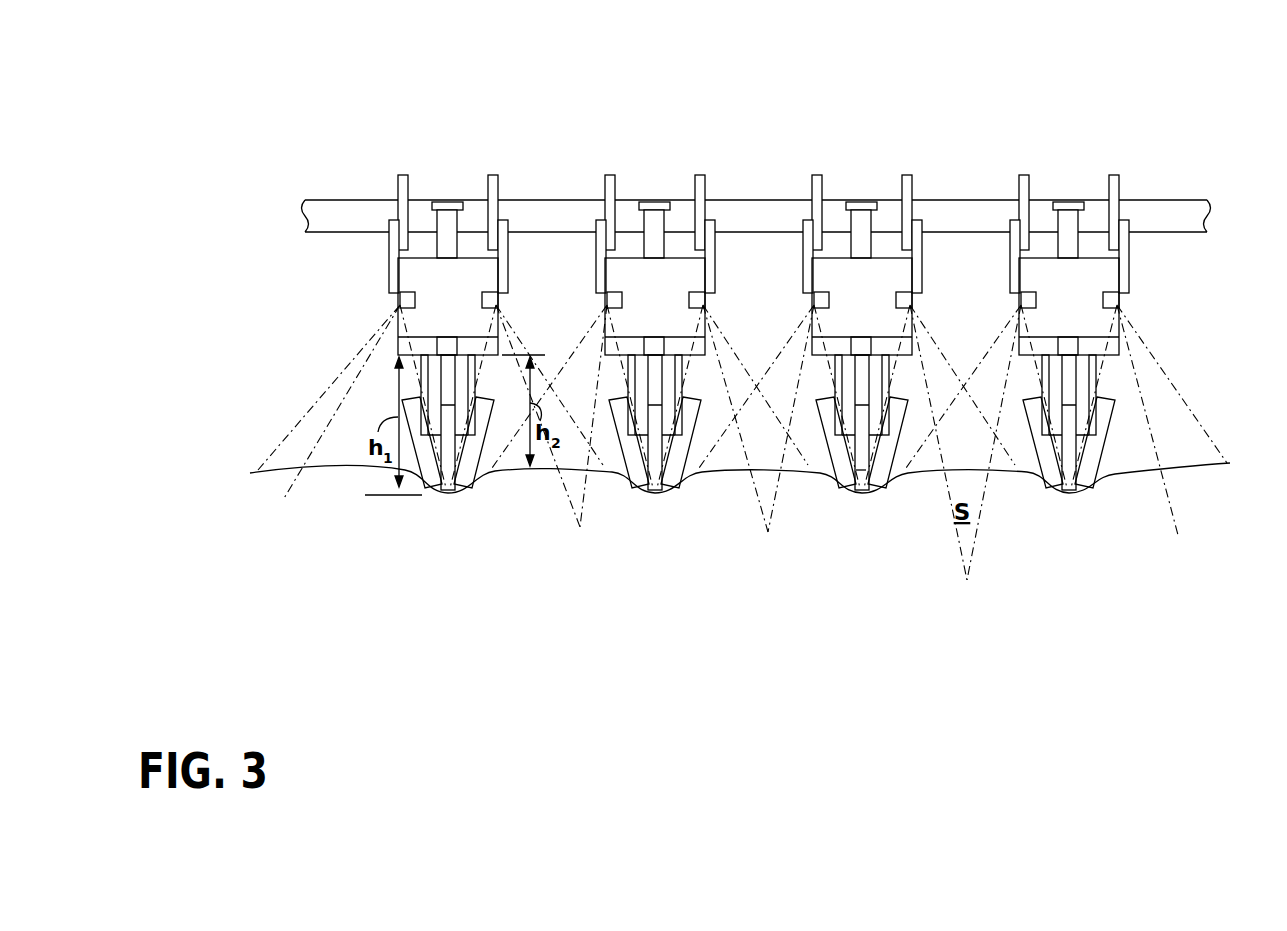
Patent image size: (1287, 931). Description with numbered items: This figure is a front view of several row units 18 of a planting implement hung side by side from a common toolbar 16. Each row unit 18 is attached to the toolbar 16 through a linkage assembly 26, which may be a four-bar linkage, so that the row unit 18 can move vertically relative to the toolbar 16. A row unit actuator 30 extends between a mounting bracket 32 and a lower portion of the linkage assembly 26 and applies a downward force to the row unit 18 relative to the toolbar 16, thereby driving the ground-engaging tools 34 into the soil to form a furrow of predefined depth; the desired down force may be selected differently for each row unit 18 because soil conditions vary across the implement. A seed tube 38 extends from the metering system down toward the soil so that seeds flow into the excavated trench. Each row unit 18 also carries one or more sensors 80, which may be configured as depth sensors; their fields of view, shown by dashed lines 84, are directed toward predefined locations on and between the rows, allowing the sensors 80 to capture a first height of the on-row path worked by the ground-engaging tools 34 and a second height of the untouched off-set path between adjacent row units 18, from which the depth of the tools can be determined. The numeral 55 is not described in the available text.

The toolbar 16 is at (1190, 210).
The row unit 18 is at (418, 282).
The linkage assembly 26 is at (385, 243).
The row unit actuator 30 is at (450, 225).
The mounting bracket 32 is at (393, 208).
The ground-engaging tool 34 is at (488, 500).
The seed tube 38 is at (430, 260).
The furrow 55 is at (860, 468).
The sensor 80 is at (398, 302).
The dashed lines 84 is at (742, 461).